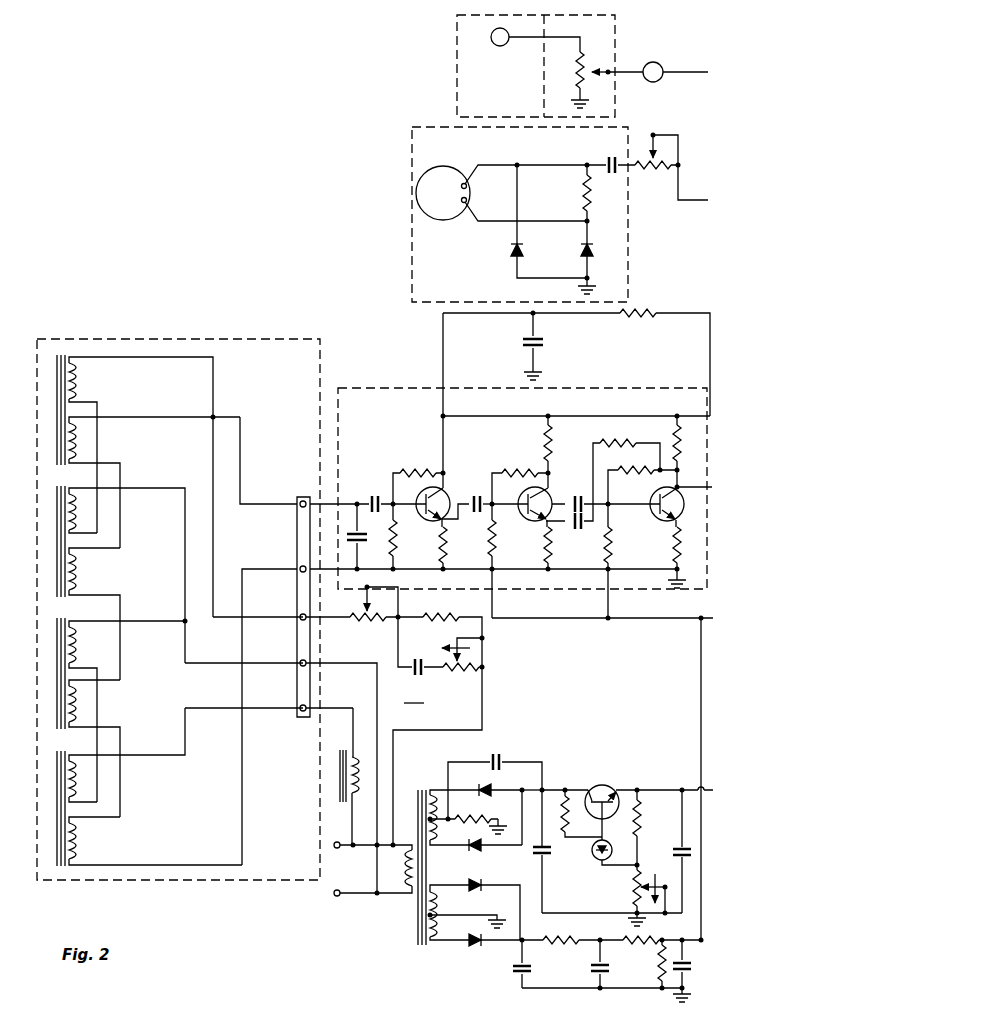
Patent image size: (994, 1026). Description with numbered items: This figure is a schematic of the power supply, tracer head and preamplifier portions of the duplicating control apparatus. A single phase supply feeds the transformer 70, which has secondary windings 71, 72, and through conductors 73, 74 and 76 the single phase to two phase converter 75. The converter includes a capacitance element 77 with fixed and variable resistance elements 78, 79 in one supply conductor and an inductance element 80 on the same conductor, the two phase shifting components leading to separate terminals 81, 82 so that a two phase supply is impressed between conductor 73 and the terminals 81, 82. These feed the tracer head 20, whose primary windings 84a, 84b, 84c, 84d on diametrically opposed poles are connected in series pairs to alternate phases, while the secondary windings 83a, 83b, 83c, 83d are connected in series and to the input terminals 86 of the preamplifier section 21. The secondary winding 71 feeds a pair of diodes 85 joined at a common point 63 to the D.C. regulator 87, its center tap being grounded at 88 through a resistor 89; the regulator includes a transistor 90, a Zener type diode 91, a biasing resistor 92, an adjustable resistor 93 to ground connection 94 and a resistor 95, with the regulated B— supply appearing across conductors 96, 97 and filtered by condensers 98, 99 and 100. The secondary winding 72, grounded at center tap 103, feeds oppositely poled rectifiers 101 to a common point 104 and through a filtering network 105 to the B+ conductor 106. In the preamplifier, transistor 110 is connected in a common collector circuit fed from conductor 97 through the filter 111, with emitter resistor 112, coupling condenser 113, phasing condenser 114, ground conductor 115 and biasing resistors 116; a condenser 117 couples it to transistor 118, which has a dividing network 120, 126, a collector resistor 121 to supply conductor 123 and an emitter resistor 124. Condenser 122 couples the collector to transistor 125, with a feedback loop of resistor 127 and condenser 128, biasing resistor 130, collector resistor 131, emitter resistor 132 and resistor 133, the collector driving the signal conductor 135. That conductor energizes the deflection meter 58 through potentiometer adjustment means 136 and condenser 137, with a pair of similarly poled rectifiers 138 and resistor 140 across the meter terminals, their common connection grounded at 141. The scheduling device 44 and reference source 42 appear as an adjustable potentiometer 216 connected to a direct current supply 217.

The tracer head 20 is at (174, 327).
The preamplifier section 21 is at (405, 448).
The reference source 42 is at (608, 41).
The scheduling device 44 is at (491, 93).
The deflection meter 58 is at (471, 155).
The common point 63 is at (525, 773).
The transformer 70 is at (408, 903).
The secondary winding 71 is at (434, 792).
The secondary winding 72 is at (432, 940).
The conductor 73 is at (379, 716).
The conductor 74 is at (393, 780).
The single phase to two phase converter 75 is at (415, 694).
The conductor 76 is at (353, 828).
The capacitance element 77 is at (418, 659).
The fixed resistance element 78 is at (458, 613).
The variable resistance element 79 is at (462, 684).
The inductance element 80 is at (340, 786).
The terminal 81 is at (300, 615).
The terminal 82 is at (300, 706).
The secondary winding 83a is at (82, 440).
The secondary winding 83b is at (82, 703).
The secondary winding 83c is at (82, 567).
The secondary winding 83d is at (82, 838).
The primary winding 84a is at (82, 378).
The primary winding 84b is at (80, 645).
The primary winding 84c is at (82, 512).
The primary winding 84d is at (82, 778).
The diodes 85 is at (481, 788).
The input terminals 86 is at (300, 502).
The D.C. regulator 87 is at (638, 767).
The ground 88 is at (503, 828).
The resistor 89 is at (482, 818).
The transistor 90 is at (598, 786).
The Zener type diode 91 is at (612, 850).
The biasing resistor 92 is at (570, 818).
The adjustable resistor 93 is at (636, 886).
The ground connection 94 is at (630, 916).
The resistor 95 is at (641, 832).
The conductor 96 is at (672, 788).
The conductor 97 is at (684, 312).
The condenser 98 is at (676, 846).
The condenser 99 is at (550, 852).
The condenser 100 is at (503, 758).
The rectifiers 101 is at (470, 882).
The center tap 103 is at (499, 918).
The common point 104 is at (518, 950).
The filtering network 105 is at (580, 981).
The conductor 106 is at (700, 982).
The transistor 110 is at (420, 500).
The filtering resistor and condenser combination 111 is at (618, 316).
The emitter resistor 112 is at (447, 550).
The coupling condenser 113 is at (369, 499).
The phasing condenser 114 is at (360, 545).
The ground conductor 115 is at (452, 571).
The biasing resistors 116 is at (404, 473).
The condenser 117 is at (474, 496).
The transistor 118 is at (518, 499).
The biasing resistor 120 is at (495, 550).
The collector resistor 121 is at (545, 441).
The condenser 122 is at (578, 496).
The supply conductor 123 is at (615, 416).
The emitter resistor 124 is at (545, 521).
The transistor 125 is at (651, 500).
The biasing resistor 126 is at (508, 473).
The resistor 127 is at (616, 442).
The condenser 128 is at (551, 545).
The biasing resistor 130 is at (626, 470).
The collector resistor 131 is at (671, 442).
The emitter resistor 132 is at (670, 550).
The resistor 133 is at (615, 548).
The signal conductor 135 is at (694, 476).
The potentiometer adjustment means 136 is at (642, 172).
The condenser 137 is at (610, 160).
The diode 138 is at (582, 248).
The resistor 140 is at (582, 186).
The ground 141 is at (590, 284).
The adjustable potentiometer 216 is at (558, 78).
The direct current supply 217 is at (497, 45).